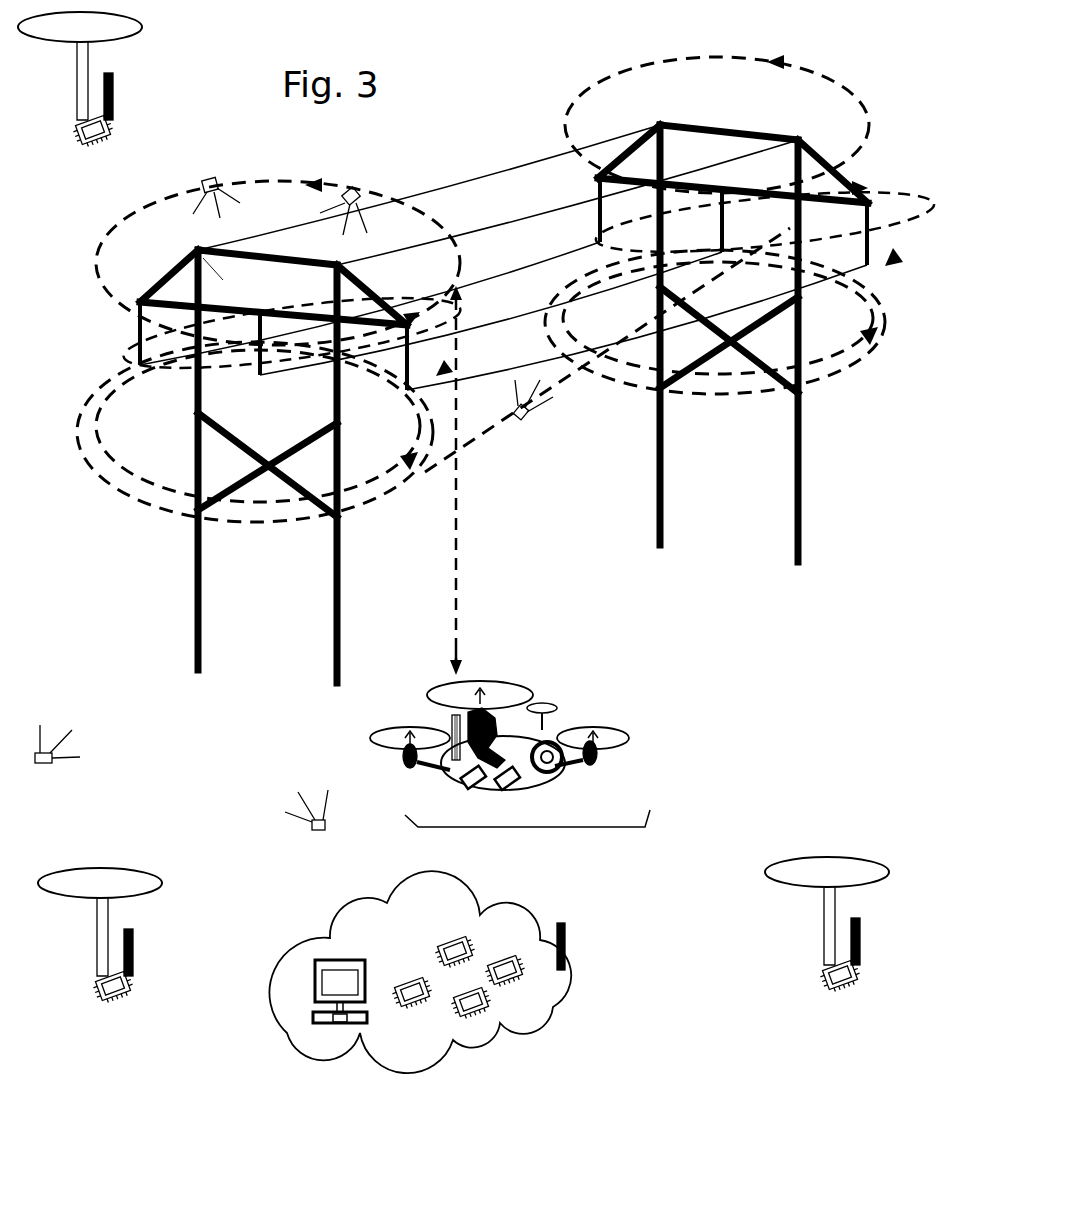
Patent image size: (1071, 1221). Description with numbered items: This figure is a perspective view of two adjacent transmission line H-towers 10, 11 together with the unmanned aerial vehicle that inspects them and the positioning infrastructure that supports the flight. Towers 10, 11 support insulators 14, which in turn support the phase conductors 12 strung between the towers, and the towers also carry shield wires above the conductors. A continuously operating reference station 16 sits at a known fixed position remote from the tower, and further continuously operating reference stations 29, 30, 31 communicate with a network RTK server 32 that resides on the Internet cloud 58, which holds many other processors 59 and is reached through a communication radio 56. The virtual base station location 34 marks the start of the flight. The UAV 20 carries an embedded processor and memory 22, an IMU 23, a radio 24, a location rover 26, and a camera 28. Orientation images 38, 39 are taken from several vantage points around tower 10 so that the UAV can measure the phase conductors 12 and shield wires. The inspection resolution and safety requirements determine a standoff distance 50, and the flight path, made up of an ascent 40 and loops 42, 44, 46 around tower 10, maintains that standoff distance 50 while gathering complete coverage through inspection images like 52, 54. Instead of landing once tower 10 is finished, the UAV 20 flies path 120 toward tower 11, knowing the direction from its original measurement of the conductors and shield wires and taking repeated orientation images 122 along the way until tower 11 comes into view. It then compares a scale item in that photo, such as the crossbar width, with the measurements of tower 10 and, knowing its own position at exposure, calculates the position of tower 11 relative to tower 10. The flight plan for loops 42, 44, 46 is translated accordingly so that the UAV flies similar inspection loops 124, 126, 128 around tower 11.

The transmission line H-tower 10 is at (203, 588).
The transmission line H-tower 11 is at (665, 488).
The phase conductors 12 is at (548, 348).
The insulators 14 is at (138, 322).
The continuously operating reference station 16 is at (414, 204).
The unmanned aerial vehicle 20 is at (540, 827).
The embedded processor and memory 22 is at (516, 785).
The inertial measurement unit 23 is at (462, 782).
The radio 24 is at (452, 728).
The location rover 26 is at (542, 702).
The camera 28 is at (562, 770).
The continuously operating reference station 29 is at (108, 133).
The continuously operating reference station 30 is at (128, 990).
The continuously operating reference station 31 is at (858, 978).
The network RTK server 32 is at (318, 963).
The virtual base station location 34 is at (452, 660).
The orientation image 38 is at (50, 765).
The orientation image 39 is at (326, 823).
The ascent 40 is at (458, 528).
The loop 42 is at (100, 265).
The loop 44 is at (125, 352).
The loop 46 is at (128, 487).
The standoff distance 50 is at (305, 186).
The inspection image 52 is at (360, 190).
The inspection image 54 is at (220, 178).
The communication radio 56 is at (566, 950).
The Internet cloud 58 is at (562, 990).
The processors 59 is at (510, 988).
The path 120 is at (480, 438).
The orientation image 122 is at (530, 415).
The inspection loop 124 is at (567, 118).
The inspection loop 126 is at (590, 215).
The inspection loop 128 is at (540, 260).